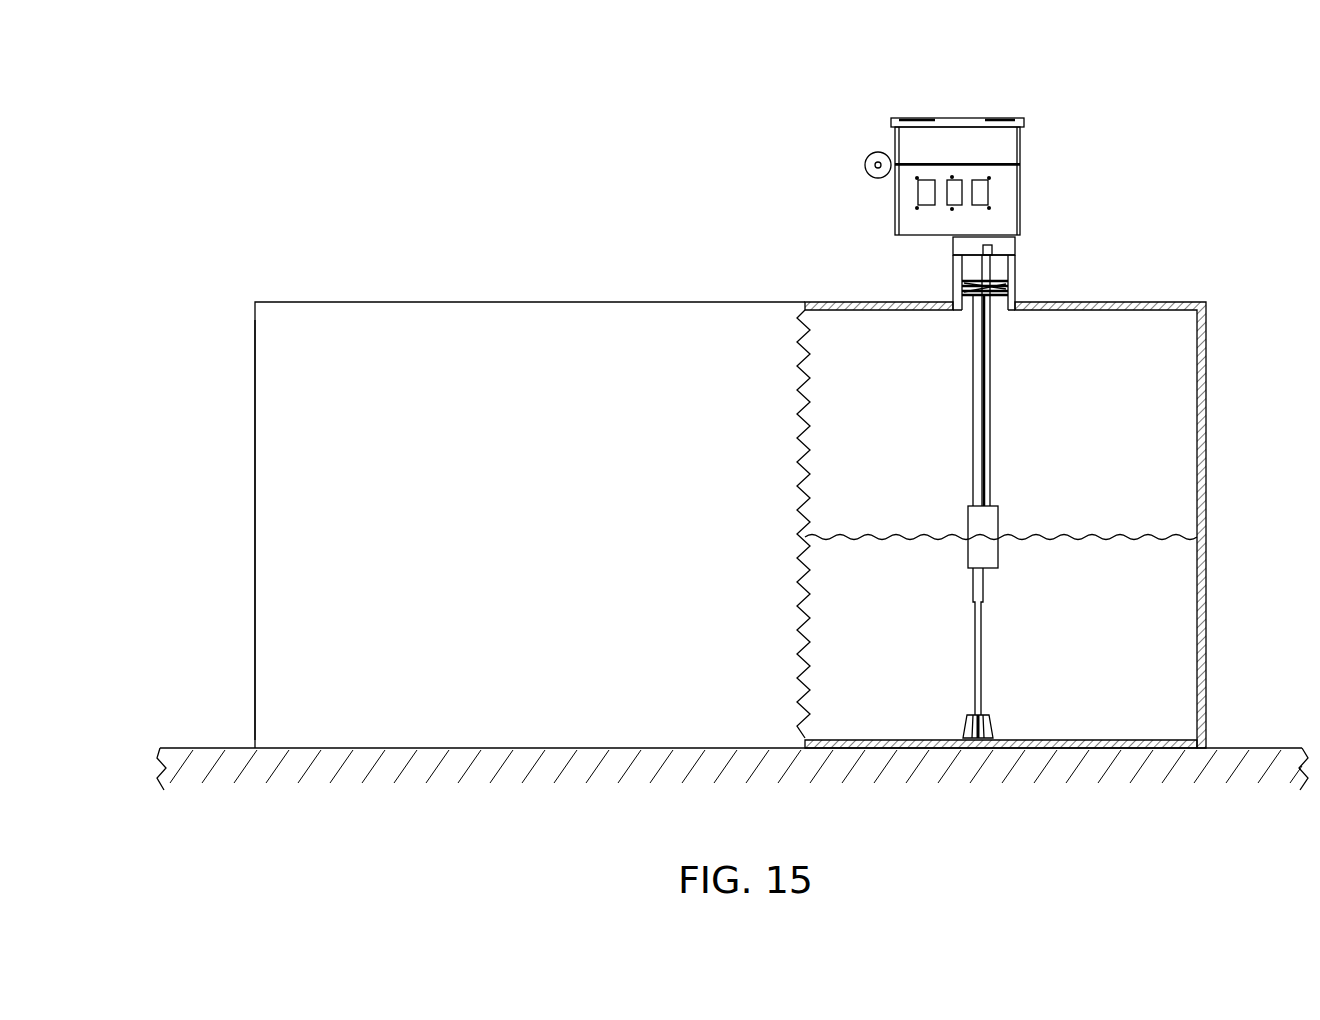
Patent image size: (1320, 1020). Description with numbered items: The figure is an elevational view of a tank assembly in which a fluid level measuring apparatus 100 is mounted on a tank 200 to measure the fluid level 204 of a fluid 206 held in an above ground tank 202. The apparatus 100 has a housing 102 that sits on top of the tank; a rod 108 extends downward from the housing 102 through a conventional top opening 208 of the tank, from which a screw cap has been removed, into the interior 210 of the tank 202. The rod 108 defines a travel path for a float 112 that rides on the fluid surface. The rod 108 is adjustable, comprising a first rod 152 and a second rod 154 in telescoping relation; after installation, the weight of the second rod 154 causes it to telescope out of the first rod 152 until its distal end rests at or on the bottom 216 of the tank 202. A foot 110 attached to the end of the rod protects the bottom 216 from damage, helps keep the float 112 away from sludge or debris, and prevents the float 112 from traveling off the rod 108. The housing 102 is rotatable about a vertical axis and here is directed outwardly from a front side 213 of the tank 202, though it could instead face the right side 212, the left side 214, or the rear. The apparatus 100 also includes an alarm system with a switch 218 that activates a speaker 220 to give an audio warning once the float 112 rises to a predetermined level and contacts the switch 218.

The fluid level measuring apparatus 100 is at (1048, 138).
The housing 102 is at (1024, 198).
The rod 108 is at (990, 588).
The foot 110 is at (993, 726).
The float 112 is at (998, 510).
The first rod 152 is at (973, 409).
The second rod 154 is at (973, 659).
The tank 200 is at (592, 188).
The above ground tank 202 is at (368, 302).
The fluid level 204 is at (1126, 535).
The fluid 206 is at (1157, 641).
The top opening 208 is at (1008, 284).
The interior 210 is at (1148, 404).
The right side 212 is at (1206, 640).
The front side 213 is at (490, 382).
The left side 214 is at (255, 603).
The bottom 216 is at (1100, 740).
The switch 218 is at (997, 306).
The speaker 220 is at (866, 158).